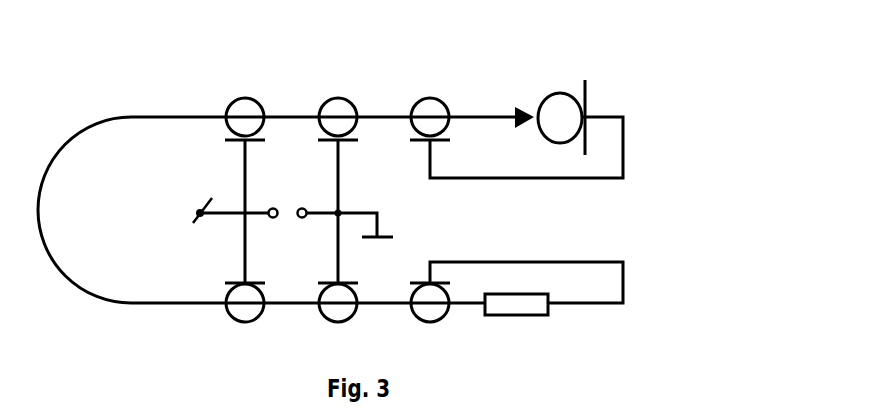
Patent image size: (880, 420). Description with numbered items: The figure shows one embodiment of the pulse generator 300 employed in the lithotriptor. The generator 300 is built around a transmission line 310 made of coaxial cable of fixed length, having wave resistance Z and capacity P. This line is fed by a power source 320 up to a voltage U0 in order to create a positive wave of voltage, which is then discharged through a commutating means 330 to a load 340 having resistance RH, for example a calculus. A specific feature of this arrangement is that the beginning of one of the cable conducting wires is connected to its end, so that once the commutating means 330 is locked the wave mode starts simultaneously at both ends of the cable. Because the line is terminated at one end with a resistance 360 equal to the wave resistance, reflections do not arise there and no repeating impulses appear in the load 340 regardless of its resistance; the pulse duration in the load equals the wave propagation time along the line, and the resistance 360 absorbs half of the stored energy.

The generator 300 is at (664, 196).
The transmission line 310 is at (59, 152).
The power source 320 is at (220, 213).
The commutating means 330 is at (325, 212).
The load 340 is at (562, 97).
The resistance 360 is at (528, 305).